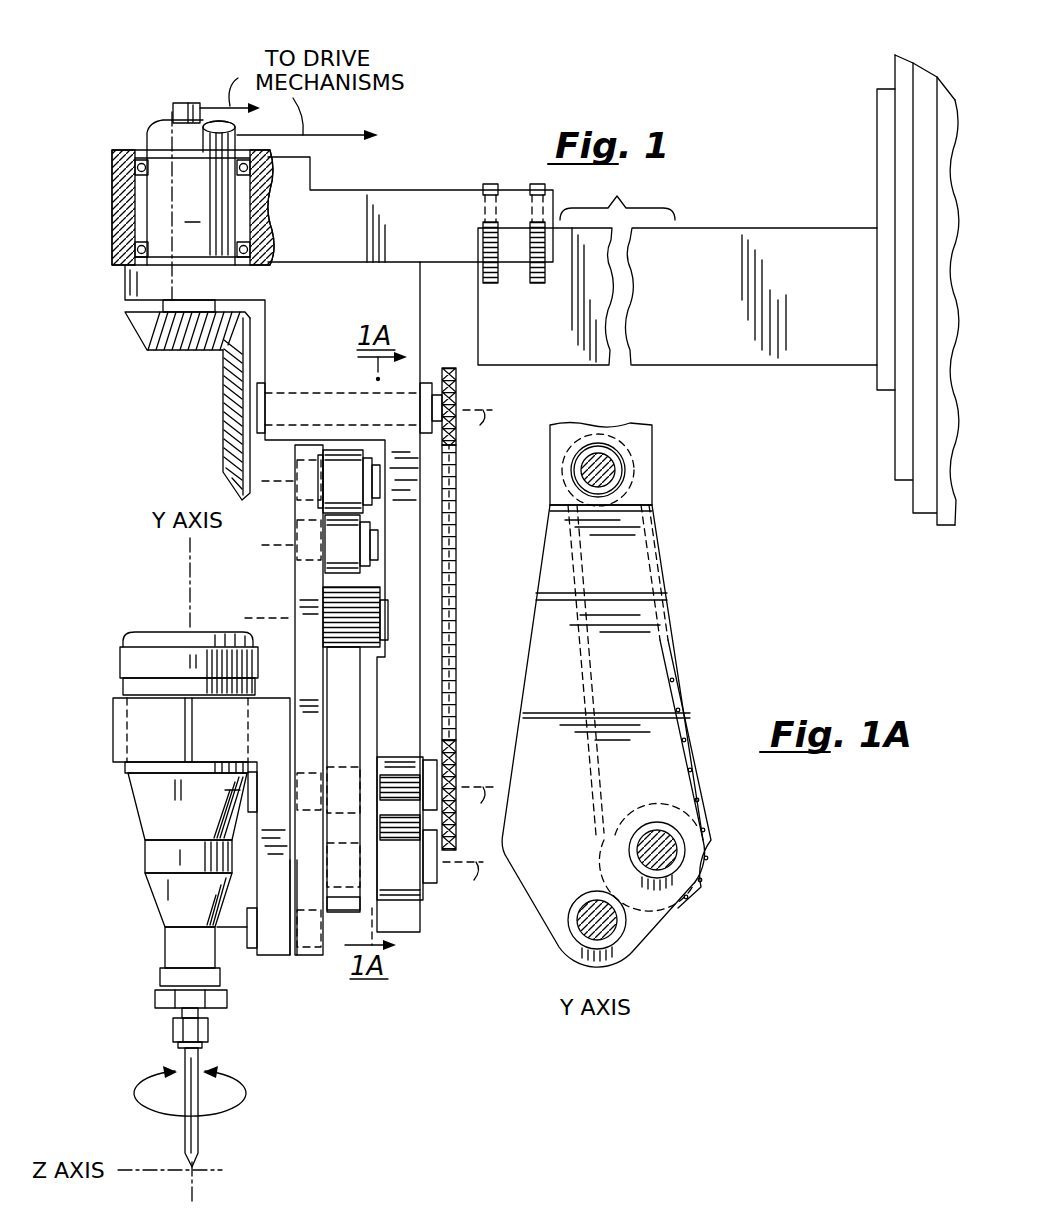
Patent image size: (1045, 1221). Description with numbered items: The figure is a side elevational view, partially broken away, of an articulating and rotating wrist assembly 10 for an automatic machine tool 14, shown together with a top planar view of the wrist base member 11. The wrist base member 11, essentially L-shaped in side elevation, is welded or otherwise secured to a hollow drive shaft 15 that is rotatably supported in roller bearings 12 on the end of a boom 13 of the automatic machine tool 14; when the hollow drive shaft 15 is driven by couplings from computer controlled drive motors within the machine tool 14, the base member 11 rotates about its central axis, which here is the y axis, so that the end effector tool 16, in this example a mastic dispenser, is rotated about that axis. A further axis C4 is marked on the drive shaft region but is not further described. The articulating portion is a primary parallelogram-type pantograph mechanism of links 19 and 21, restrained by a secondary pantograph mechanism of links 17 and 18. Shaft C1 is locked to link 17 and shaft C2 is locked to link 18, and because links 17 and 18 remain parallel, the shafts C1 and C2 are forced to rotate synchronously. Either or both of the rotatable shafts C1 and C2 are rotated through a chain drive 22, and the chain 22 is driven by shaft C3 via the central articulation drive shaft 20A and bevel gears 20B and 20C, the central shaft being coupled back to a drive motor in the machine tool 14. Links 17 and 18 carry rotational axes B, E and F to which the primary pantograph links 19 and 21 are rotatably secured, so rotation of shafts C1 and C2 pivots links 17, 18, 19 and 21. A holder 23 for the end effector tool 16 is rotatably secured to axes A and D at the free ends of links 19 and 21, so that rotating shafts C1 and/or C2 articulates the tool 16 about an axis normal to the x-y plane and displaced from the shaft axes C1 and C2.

In FIG. 1, the wrist assembly 10 is at (280, 587).
In FIG. 1, the wrist base member 11 is at (410, 529).
In FIG. 1A, the wrist base member 11 is at (643, 452).
In FIG. 1, the roller bearings 12 is at (135, 157).
In FIG. 1, the boom 13 is at (337, 205).
In FIG. 1, the automatic machine tool 14 is at (873, 127).
In FIG. 1, the hollow drive shaft 15 is at (162, 130).
In FIG. 1, the end effector tool 16 is at (155, 818).
In FIG. 1, the link 17 is at (347, 458).
In FIG. 1, the link 18 is at (353, 731).
In FIG. 1, the link 19 is at (306, 958).
In FIG. 1, the articulation drive shaft 20A is at (192, 101).
In FIG. 1, the bevel gear 20B is at (135, 320).
In FIG. 1, the bevel gear 20C is at (228, 423).
In FIG. 1, the link 21 is at (303, 509).
In FIG. 1, the chain drive 22 is at (460, 557).
In FIG. 1A, the chain drive 22 is at (683, 690).
In FIG. 1, the holder 23 is at (117, 720).
In FIG. 1, the axis A is at (228, 930).
In FIG. 1, the rotational axis B is at (272, 616).
In FIG. 1, the axis D is at (228, 790).
In FIG. 1, the rotational axis E is at (284, 480).
In FIG. 1, the rotational axis F is at (283, 545).
In FIG. 1, the rotatable shaft C1 is at (466, 892).
In FIG. 1A, the rotatable shaft C1 is at (600, 913).
In FIG. 1, the rotatable shaft C2 is at (480, 812).
In FIG. 1A, the rotatable shaft C2 is at (665, 832).
In FIG. 1, the shaft C3 is at (484, 439).
In FIG. 1A, the shaft C3 is at (597, 458).
In FIG. 1, the shaft axis C4 is at (186, 222).